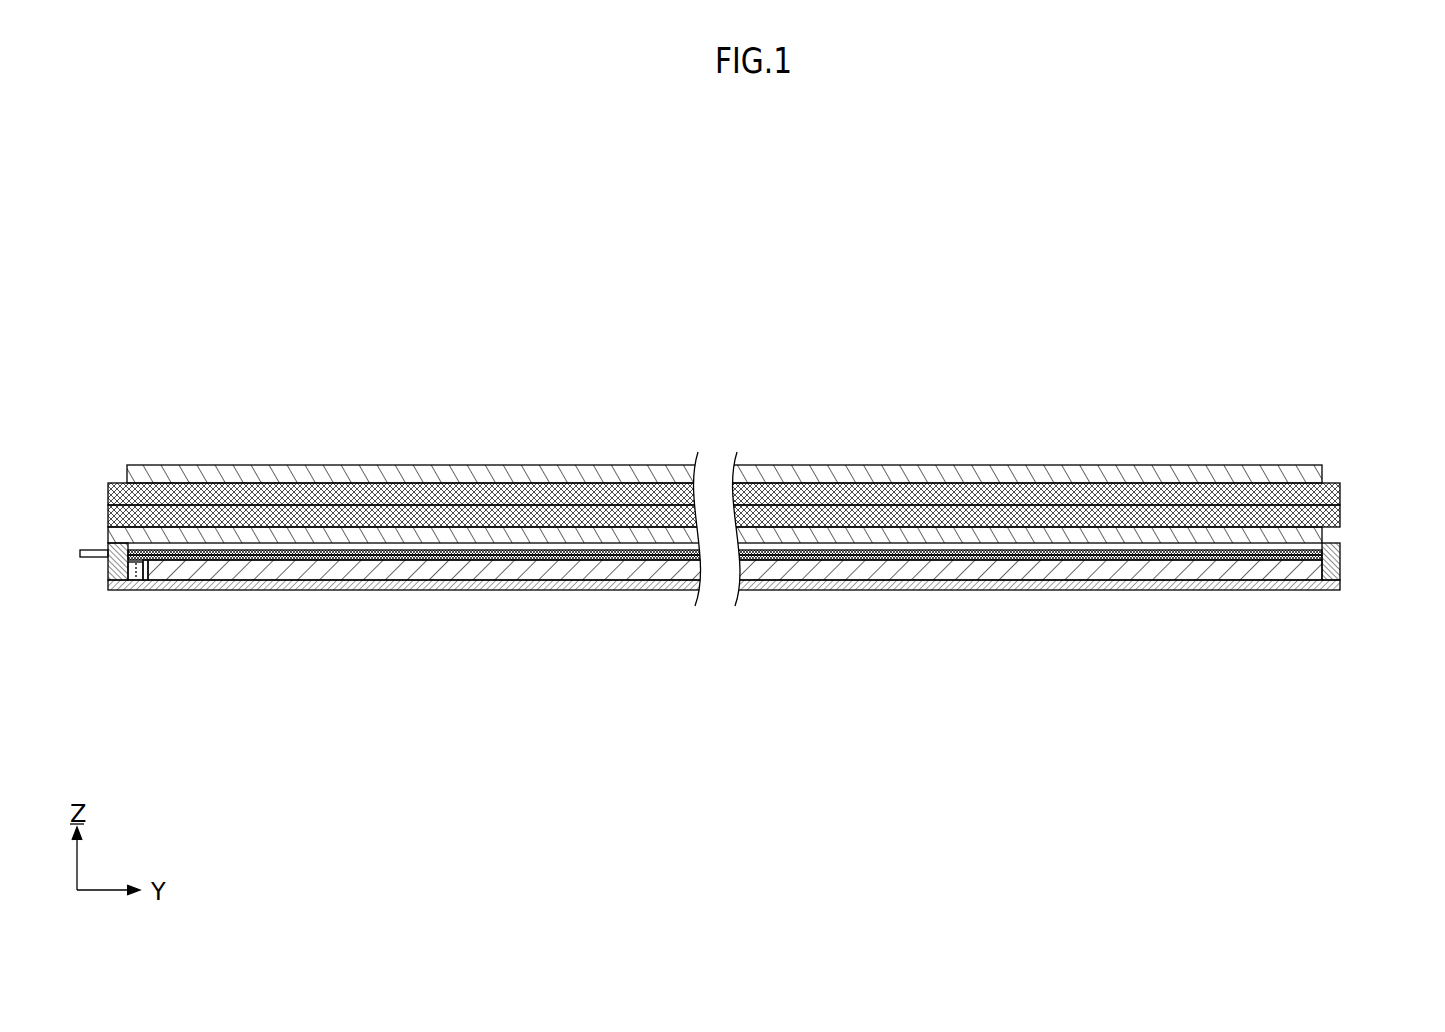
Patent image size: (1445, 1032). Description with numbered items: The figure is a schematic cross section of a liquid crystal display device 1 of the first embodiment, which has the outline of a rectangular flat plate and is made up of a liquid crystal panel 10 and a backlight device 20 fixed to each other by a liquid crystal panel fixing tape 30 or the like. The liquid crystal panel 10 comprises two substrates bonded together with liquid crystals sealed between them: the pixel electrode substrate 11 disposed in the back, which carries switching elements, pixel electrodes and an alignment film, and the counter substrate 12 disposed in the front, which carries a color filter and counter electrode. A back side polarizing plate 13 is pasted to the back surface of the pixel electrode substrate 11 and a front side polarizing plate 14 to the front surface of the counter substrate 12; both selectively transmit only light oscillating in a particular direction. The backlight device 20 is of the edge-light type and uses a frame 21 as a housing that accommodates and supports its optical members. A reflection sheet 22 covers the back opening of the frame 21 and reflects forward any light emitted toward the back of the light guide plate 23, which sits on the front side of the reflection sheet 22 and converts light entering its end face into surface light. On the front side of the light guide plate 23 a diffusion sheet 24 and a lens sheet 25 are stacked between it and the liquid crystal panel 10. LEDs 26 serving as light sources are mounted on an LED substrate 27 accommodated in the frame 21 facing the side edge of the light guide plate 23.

The liquid crystal display device 1 is at (1235, 416).
The liquid crystal panel 10 is at (1385, 437).
The pixel electrode substrate 11 is at (1325, 520).
The counter substrate 12 is at (1327, 497).
The back side polarizing plate 13 is at (1315, 535).
The front side polarizing plate 14 is at (1308, 475).
The backlight device 20 is at (578, 680).
The frame 21 is at (128, 574).
The reflection sheet 22 is at (284, 588).
The light guide plate 23 is at (342, 572).
The diffusion sheet 24 is at (425, 560).
The lens sheet 25 is at (510, 552).
The LEDs 26 is at (145, 576).
The LED substrate 27 is at (80, 557).
The liquid crystal panel fixing tape 30 is at (116, 548).